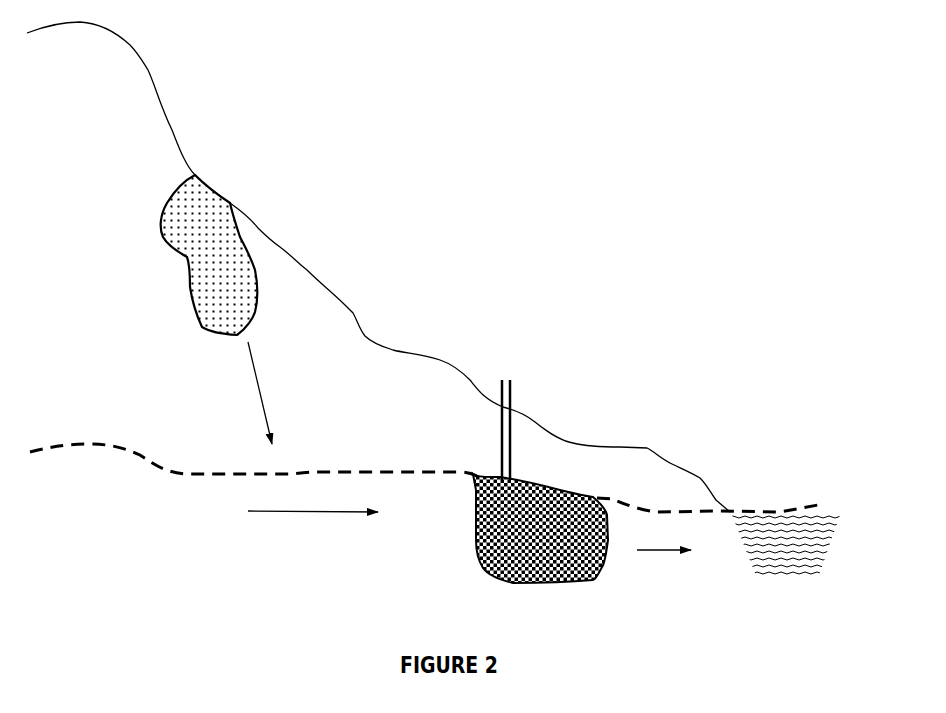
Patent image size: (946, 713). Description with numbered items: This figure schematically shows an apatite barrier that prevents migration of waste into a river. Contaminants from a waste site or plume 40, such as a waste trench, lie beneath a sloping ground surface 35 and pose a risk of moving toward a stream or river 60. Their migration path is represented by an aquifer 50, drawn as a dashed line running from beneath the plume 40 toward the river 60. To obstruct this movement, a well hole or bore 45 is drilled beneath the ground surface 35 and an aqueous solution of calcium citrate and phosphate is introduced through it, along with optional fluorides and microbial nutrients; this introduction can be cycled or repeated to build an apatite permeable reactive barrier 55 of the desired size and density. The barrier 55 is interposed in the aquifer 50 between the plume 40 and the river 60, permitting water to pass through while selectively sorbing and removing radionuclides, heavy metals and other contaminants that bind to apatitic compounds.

The ground surface 35 is at (353, 310).
The waste site or plume 40 is at (170, 225).
The well hole or bore 45 is at (505, 408).
The aquifer 50 is at (235, 485).
The apatite permeable reactive barrier 55 is at (493, 535).
The stream or river 60 is at (805, 520).